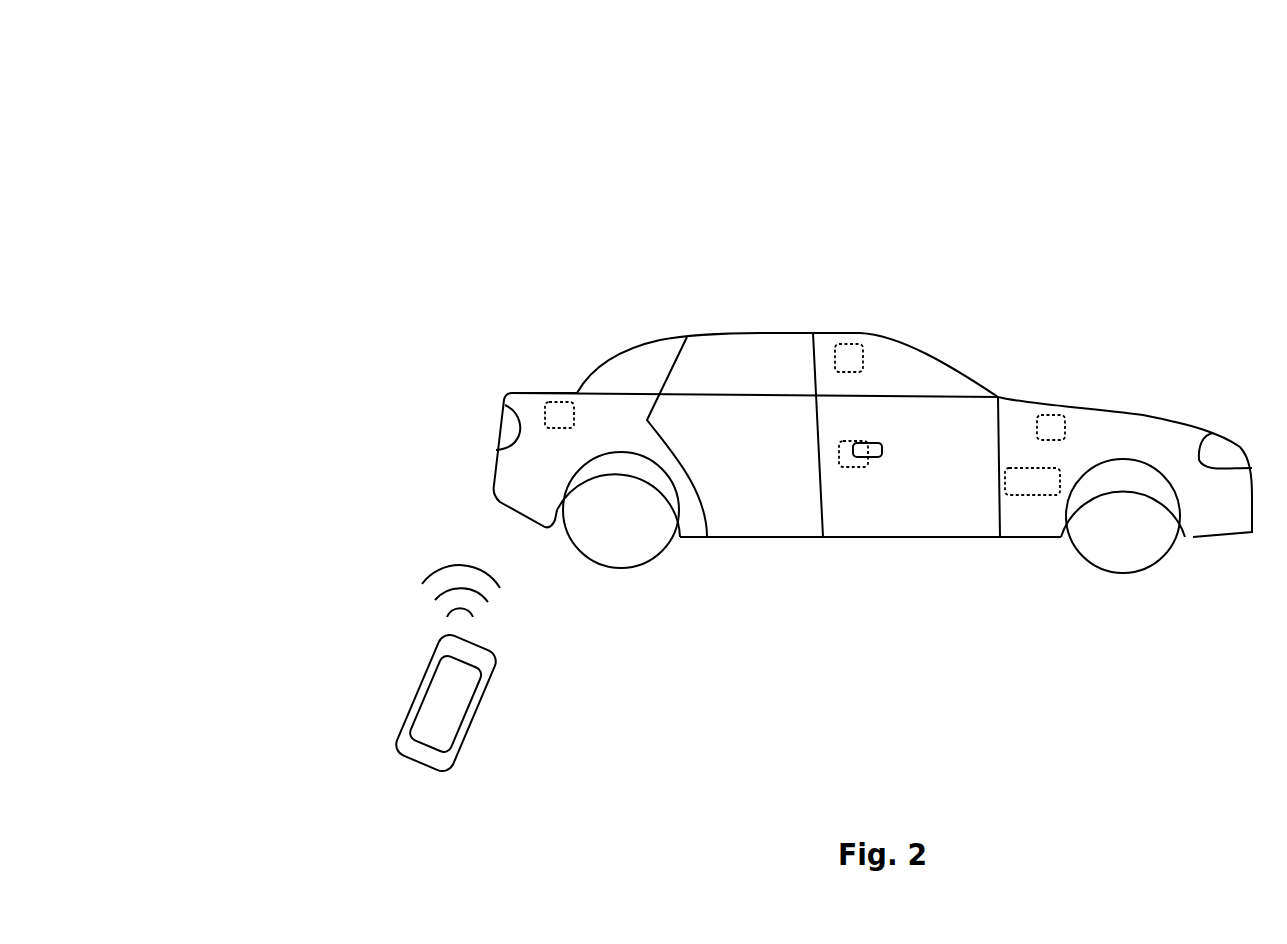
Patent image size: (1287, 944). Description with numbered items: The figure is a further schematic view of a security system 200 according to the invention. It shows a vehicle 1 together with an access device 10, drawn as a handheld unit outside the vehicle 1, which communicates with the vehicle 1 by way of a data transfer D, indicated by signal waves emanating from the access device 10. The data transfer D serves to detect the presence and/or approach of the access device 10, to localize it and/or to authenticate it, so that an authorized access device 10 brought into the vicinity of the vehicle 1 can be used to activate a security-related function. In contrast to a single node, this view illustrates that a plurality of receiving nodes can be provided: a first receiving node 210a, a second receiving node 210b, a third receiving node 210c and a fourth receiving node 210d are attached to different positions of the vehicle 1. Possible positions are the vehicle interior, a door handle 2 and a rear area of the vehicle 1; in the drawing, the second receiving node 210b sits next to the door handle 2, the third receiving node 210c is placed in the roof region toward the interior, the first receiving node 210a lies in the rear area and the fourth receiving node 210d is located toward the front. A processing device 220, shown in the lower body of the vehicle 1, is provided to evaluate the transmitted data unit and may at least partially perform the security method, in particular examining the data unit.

The security system 200 is at (335, 118).
The vehicle 1 is at (1117, 410).
The door handle 2 is at (882, 447).
The first receiving node 210a is at (545, 416).
The second receiving node 210b is at (839, 456).
The third receiving node 210c is at (835, 352).
The fourth receiving node 210d is at (1065, 424).
The processing device 220 is at (1023, 495).
The access device 10 is at (478, 755).
The data transfer D is at (408, 568).